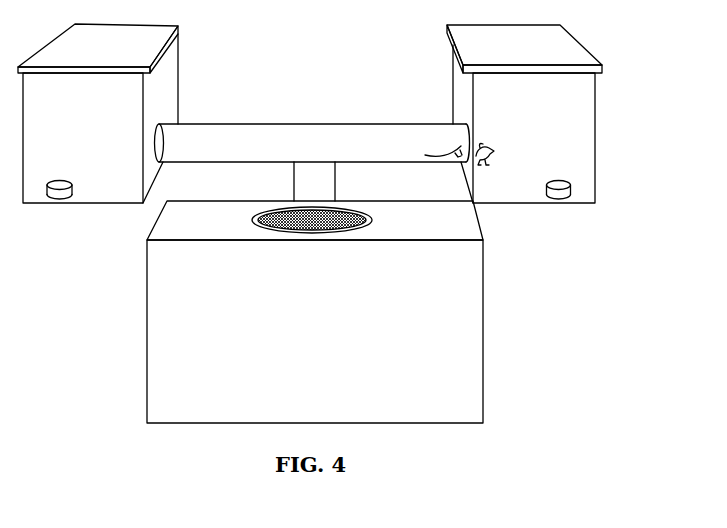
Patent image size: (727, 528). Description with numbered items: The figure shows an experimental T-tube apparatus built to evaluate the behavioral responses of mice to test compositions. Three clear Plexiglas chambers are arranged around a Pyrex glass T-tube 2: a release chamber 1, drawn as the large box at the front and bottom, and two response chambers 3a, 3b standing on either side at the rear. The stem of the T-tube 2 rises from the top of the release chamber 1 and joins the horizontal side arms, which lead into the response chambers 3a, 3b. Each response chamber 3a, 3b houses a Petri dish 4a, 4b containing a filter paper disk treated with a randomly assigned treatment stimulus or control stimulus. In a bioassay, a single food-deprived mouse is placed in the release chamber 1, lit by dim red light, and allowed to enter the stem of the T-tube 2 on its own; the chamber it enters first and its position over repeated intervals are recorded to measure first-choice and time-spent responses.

The release chamber 1 is at (315, 312).
The T-tube 2 is at (325, 162).
The response chamber 3a is at (98, 113).
The response chamber 3b is at (524, 114).
The Petri dish 4a is at (76, 191).
The Petri dish 4b is at (543, 188).